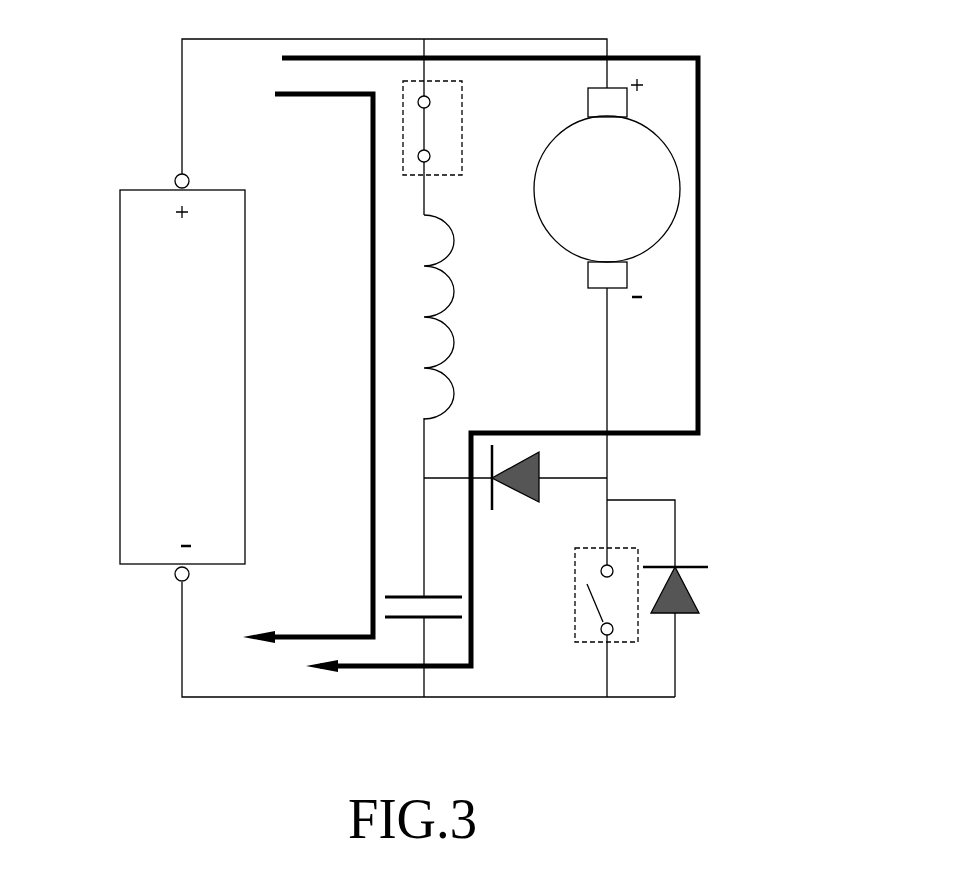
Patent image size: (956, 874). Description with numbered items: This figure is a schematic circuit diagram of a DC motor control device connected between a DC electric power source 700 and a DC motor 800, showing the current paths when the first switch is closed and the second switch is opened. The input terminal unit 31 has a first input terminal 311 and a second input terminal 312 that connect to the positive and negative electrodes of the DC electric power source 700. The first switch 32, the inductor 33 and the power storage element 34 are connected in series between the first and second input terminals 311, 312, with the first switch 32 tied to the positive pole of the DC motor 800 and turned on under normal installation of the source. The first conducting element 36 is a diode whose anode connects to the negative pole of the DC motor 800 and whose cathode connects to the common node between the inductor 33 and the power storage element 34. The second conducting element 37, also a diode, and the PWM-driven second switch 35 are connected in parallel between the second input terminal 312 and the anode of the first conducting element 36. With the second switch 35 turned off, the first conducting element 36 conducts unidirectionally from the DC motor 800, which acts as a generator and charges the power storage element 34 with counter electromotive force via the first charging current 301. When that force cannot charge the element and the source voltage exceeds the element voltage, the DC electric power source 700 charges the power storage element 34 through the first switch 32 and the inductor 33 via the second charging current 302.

The input terminal unit 31 is at (182, 80).
The first input terminal 311 is at (172, 178).
The second input terminal 312 is at (177, 585).
The DC electric power source 700 is at (147, 402).
The first charging current 301 is at (698, 327).
The second charging current 302 is at (372, 373).
The first switch 32 is at (446, 103).
The inductor 33 is at (455, 345).
The power storage element 34 is at (405, 595).
The second switch 35 is at (575, 637).
The first conducting element 36 is at (517, 497).
The second conducting element 37 is at (697, 600).
The DC motor 800 is at (638, 238).